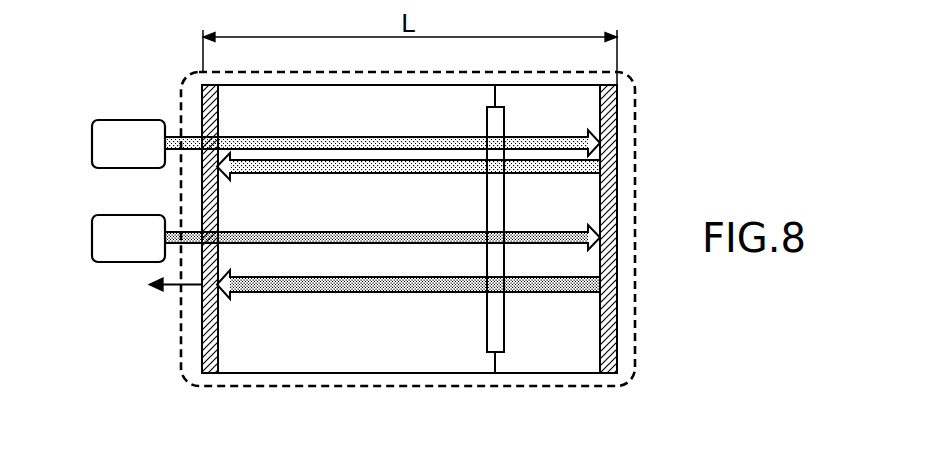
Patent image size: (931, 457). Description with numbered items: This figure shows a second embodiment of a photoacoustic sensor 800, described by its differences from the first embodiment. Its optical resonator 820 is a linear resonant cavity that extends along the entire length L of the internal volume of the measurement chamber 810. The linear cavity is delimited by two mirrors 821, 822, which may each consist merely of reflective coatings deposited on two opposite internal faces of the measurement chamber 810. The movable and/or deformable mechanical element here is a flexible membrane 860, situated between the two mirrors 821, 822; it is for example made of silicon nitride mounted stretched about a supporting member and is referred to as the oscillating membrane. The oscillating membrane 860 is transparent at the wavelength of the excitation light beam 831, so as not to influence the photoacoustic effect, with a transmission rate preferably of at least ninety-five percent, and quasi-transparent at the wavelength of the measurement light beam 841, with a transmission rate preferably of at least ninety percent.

The photoacoustic sensor 800 is at (661, 74).
The measurement chamber 810 is at (358, 373).
The optical resonator 820 is at (178, 343).
The mirror 821 is at (208, 312).
The mirror 822 is at (612, 185).
The excitation light beam 831 is at (168, 136).
The measurement light beam 841 is at (246, 232).
The flexible membrane 860 is at (495, 323).